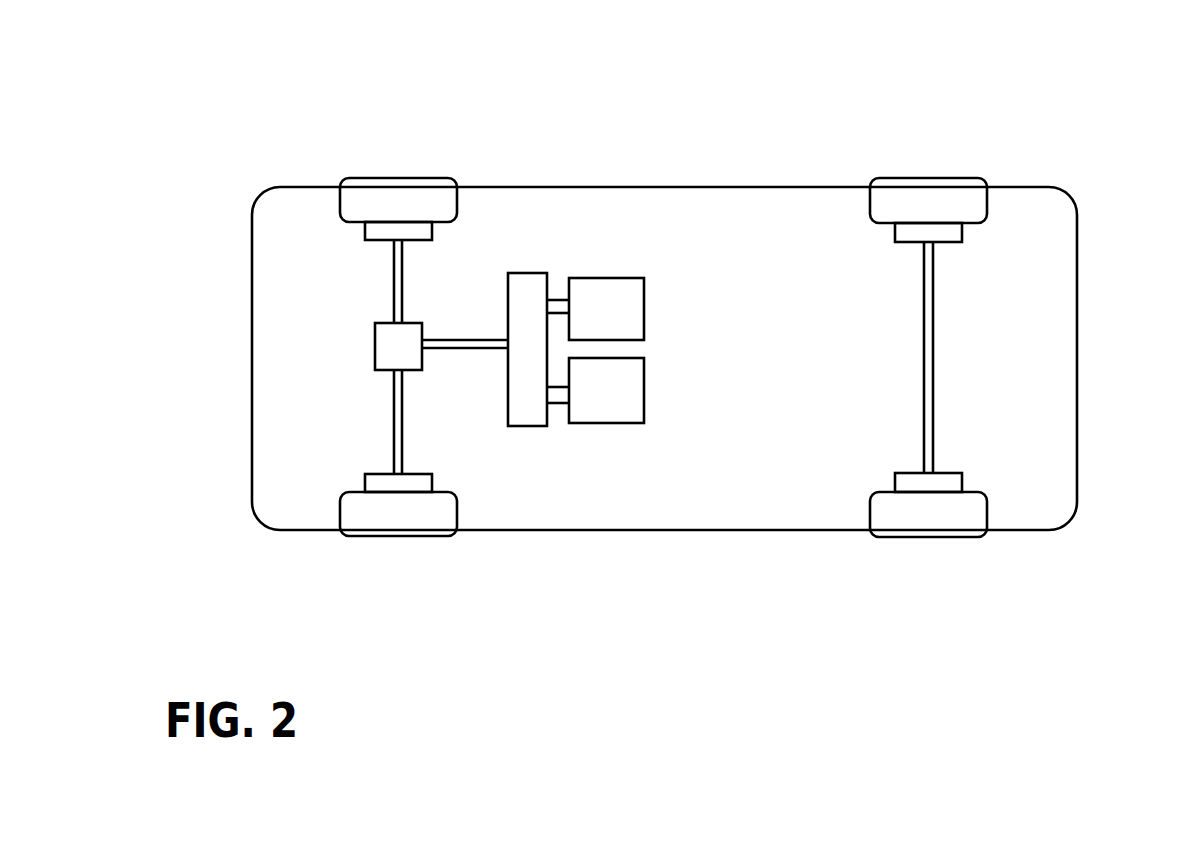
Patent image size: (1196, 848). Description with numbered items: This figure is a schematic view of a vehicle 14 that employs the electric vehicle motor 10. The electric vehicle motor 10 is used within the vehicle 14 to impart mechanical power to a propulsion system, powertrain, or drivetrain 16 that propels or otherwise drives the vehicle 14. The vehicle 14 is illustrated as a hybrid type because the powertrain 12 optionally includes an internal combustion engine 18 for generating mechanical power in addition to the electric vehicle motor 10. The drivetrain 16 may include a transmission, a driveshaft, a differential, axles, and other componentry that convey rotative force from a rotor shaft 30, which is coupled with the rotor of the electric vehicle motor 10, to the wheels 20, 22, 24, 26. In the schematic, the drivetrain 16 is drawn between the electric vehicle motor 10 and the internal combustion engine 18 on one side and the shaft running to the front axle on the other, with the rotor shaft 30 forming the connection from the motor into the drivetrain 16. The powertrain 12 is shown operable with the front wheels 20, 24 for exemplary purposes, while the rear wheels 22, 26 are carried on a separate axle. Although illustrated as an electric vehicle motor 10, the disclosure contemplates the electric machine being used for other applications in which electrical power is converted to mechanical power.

The electric vehicle motor 10 is at (606, 309).
The powertrain 12 is at (830, 205).
The vehicle 14 is at (1083, 98).
The drivetrain 16 is at (484, 295).
The internal combustion engine 18 is at (606, 390).
The front wheel 20 is at (414, 178).
The wheel 22 is at (947, 178).
The front wheel 24 is at (413, 537).
The wheel 26 is at (930, 538).
The rotor shaft 30 is at (558, 298).